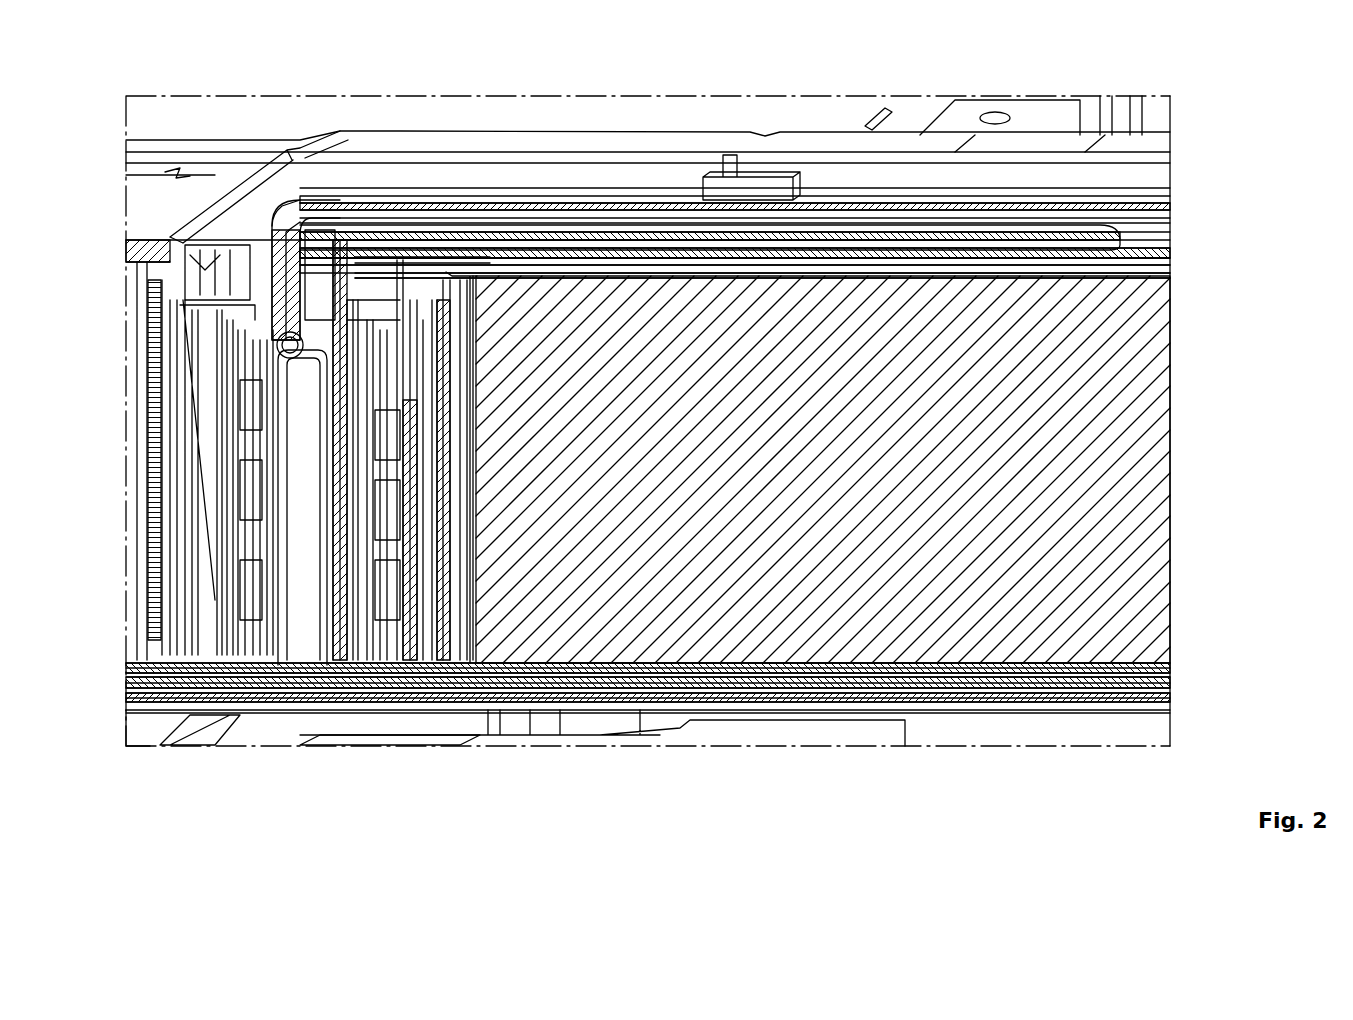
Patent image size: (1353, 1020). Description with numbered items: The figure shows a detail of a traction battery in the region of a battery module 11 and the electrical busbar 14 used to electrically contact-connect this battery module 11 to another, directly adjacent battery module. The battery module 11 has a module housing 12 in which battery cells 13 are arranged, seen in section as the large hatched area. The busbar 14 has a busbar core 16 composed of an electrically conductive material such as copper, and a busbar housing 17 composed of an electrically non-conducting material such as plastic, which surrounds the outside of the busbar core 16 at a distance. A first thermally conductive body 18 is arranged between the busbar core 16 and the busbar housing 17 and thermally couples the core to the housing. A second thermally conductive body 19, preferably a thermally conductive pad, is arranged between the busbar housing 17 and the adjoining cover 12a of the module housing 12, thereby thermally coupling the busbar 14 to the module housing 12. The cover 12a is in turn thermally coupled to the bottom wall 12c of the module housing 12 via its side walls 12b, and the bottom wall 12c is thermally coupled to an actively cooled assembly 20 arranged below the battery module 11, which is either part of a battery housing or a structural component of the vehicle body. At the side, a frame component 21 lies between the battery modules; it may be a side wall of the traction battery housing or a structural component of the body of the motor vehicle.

The battery module 11 is at (172, 130).
The module housing 12 is at (721, 506).
The cover 12a is at (1150, 260).
The side walls 12b is at (388, 580).
The bottom wall 12c is at (968, 703).
The battery cells 13 is at (820, 467).
The electrical busbar 14 is at (524, 190).
The busbar core 16 is at (860, 222).
The busbar housing 17 is at (980, 205).
The first thermally conductive body 18 is at (454, 236).
The second thermally conductive body 19 is at (493, 242).
The actively cooled assembly 20 is at (1183, 694).
The frame component 21 is at (270, 497).